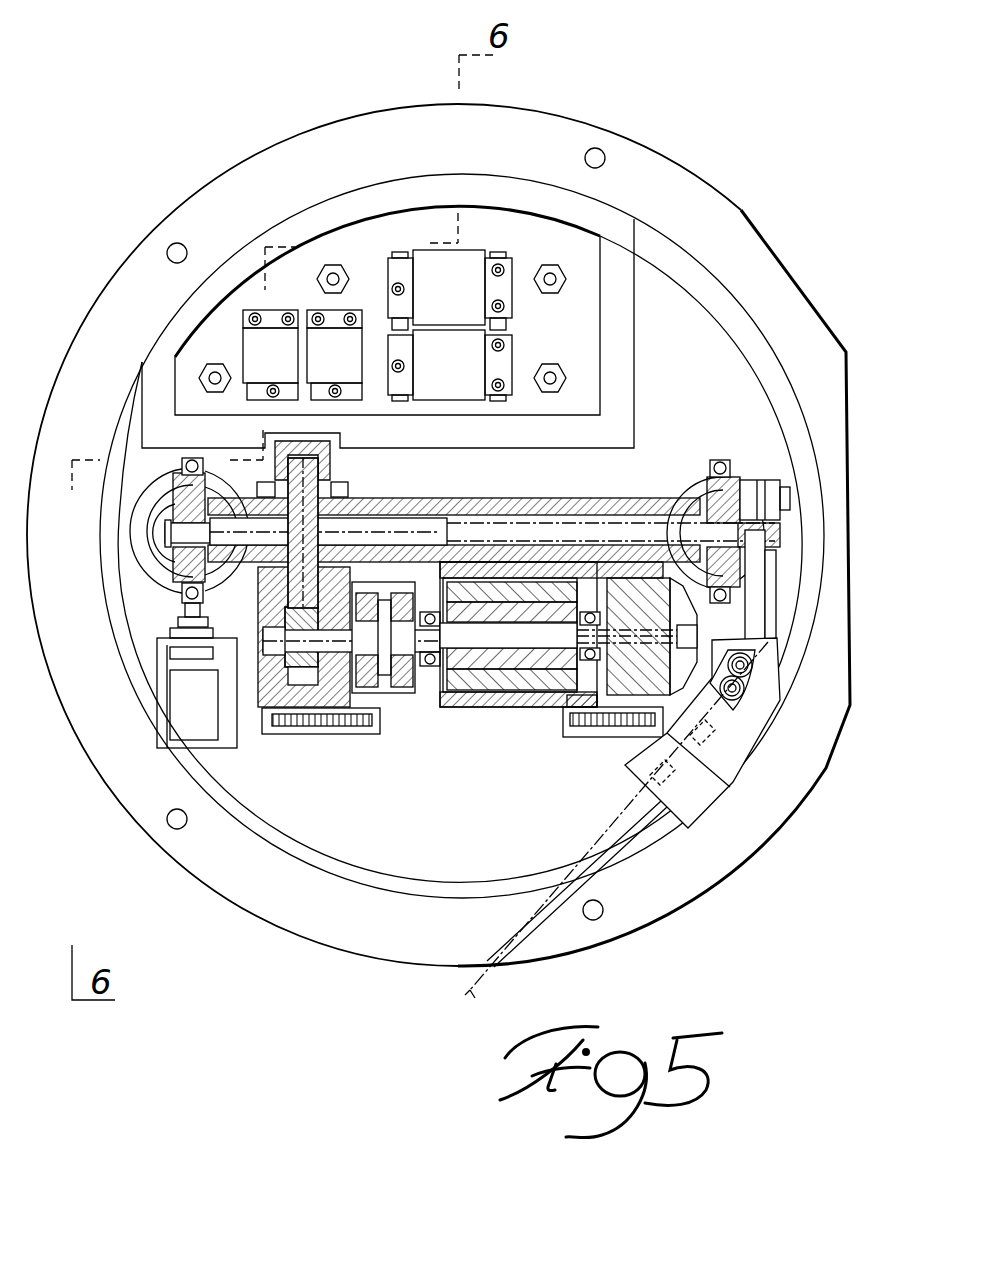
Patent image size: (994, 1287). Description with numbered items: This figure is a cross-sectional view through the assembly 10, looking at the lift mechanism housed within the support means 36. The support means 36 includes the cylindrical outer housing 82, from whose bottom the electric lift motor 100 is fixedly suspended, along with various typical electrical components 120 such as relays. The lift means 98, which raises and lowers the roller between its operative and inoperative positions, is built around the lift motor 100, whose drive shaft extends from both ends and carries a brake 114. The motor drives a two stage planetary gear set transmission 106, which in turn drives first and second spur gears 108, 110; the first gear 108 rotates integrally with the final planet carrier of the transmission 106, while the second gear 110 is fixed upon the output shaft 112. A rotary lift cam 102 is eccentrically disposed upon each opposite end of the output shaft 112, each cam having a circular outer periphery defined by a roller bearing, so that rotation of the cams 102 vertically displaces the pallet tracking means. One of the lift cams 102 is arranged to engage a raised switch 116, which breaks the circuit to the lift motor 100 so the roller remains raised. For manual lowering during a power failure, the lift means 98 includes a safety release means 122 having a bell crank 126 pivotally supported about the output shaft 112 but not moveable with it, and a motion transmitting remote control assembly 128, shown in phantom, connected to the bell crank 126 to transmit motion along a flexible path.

The assembly 10 is at (664, 112).
The support means 36 is at (270, 146).
The outer housing 82 is at (755, 224).
The lift means 98 is at (323, 744).
The lift motor 100 is at (510, 690).
The lift cam 102 is at (178, 566).
The two stage planetary gear set transmission 106 is at (395, 672).
The first spur gear 108 is at (300, 665).
The second spur gear 110 is at (304, 474).
The output shaft 112 is at (527, 525).
The brake 114 is at (612, 722).
The raised switch 116 is at (188, 607).
The electrical components 120 is at (362, 335).
The safety release means 122 is at (772, 468).
The bell crank 126 is at (765, 645).
The motion transmitting remote control assembly 128 is at (758, 728).